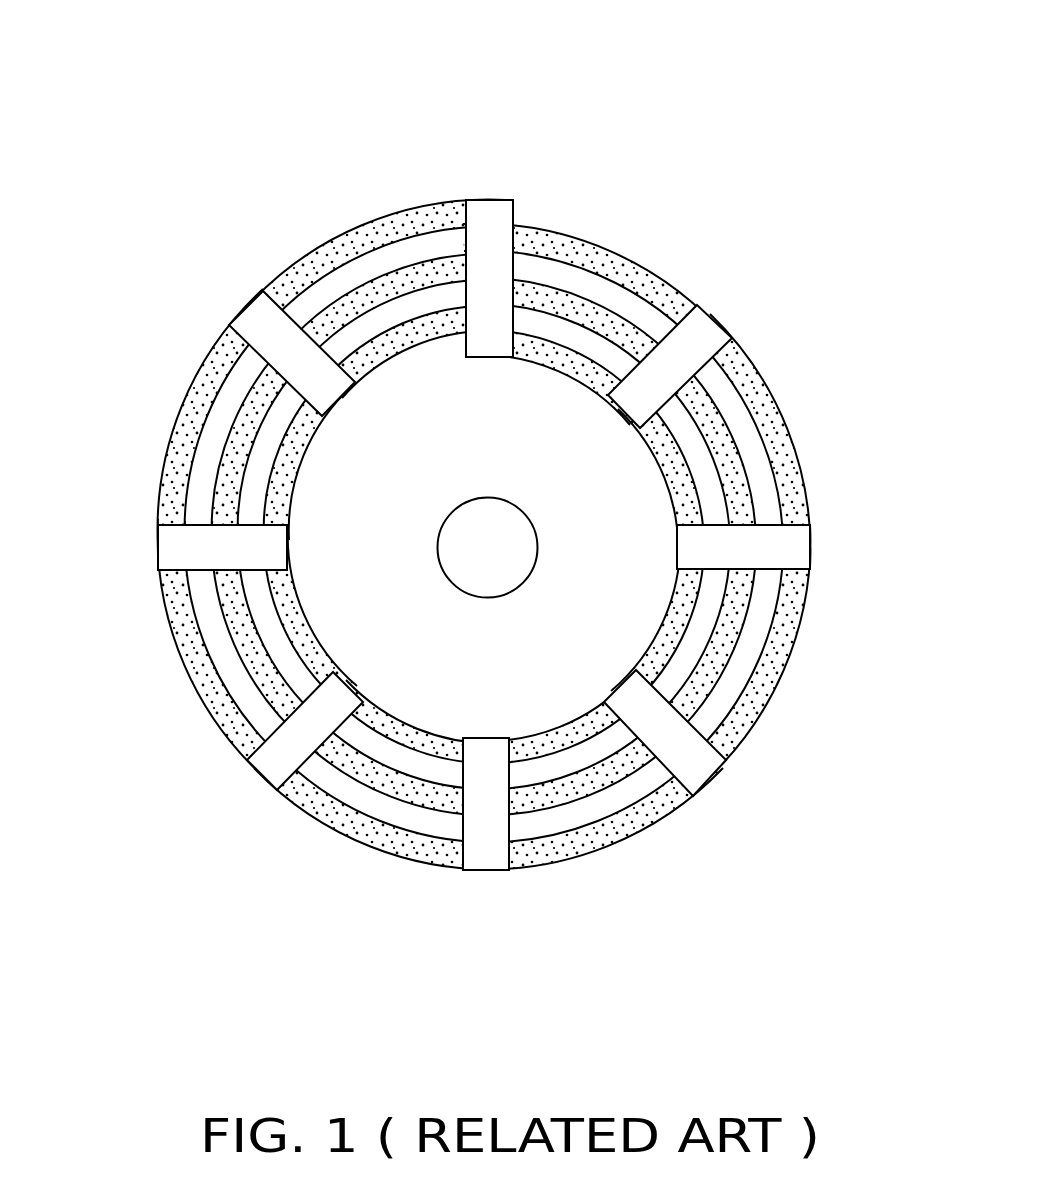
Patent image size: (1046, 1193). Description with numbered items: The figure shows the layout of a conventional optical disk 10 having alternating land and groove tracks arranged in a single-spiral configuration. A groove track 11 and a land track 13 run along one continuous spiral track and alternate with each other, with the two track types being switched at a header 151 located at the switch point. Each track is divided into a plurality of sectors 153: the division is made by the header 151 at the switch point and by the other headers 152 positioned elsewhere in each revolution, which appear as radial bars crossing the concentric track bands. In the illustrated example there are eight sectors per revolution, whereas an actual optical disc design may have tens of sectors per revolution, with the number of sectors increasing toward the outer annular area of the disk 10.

The optical disk 10 is at (494, 495).
The groove track 11 is at (494, 517).
The land track 13 is at (494, 517).
The header 151 is at (492, 218).
The header 152 is at (693, 337).
The sector 153 is at (241, 270).